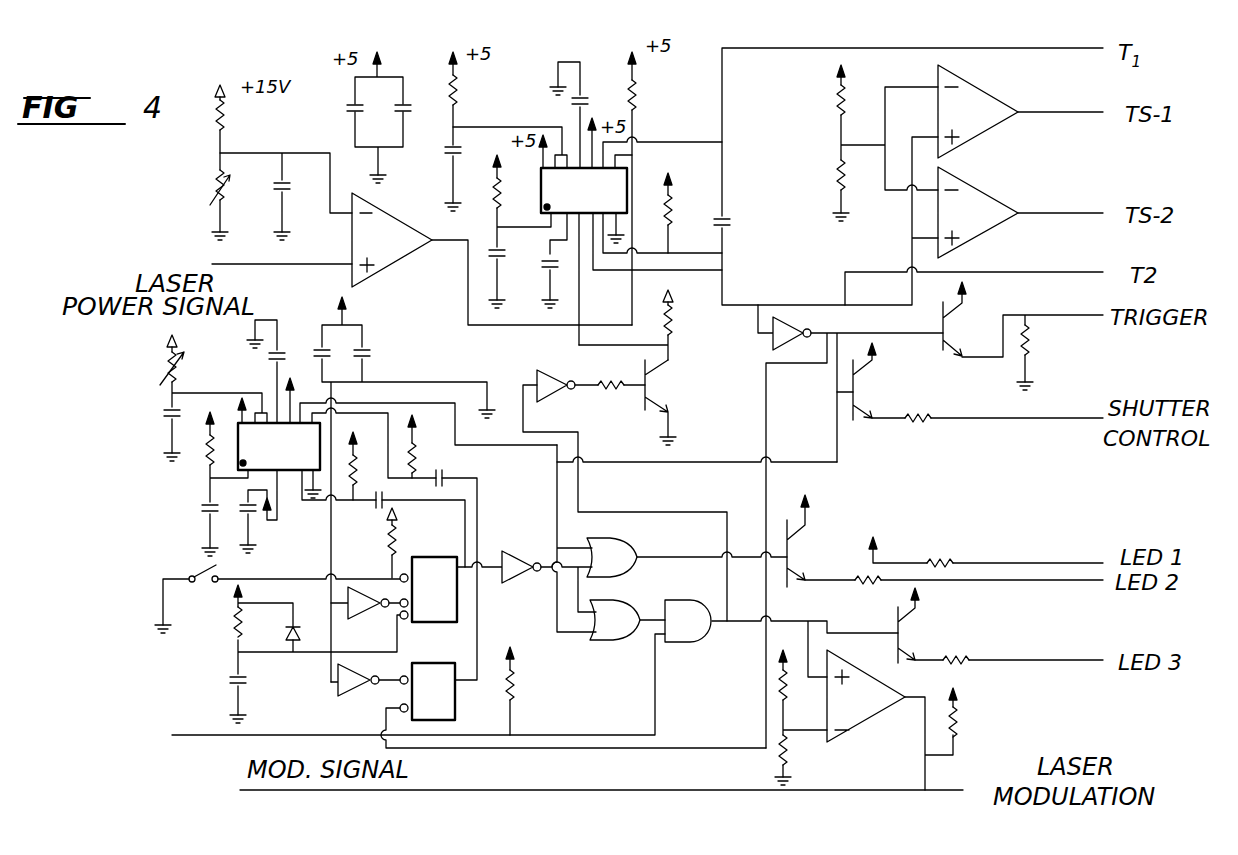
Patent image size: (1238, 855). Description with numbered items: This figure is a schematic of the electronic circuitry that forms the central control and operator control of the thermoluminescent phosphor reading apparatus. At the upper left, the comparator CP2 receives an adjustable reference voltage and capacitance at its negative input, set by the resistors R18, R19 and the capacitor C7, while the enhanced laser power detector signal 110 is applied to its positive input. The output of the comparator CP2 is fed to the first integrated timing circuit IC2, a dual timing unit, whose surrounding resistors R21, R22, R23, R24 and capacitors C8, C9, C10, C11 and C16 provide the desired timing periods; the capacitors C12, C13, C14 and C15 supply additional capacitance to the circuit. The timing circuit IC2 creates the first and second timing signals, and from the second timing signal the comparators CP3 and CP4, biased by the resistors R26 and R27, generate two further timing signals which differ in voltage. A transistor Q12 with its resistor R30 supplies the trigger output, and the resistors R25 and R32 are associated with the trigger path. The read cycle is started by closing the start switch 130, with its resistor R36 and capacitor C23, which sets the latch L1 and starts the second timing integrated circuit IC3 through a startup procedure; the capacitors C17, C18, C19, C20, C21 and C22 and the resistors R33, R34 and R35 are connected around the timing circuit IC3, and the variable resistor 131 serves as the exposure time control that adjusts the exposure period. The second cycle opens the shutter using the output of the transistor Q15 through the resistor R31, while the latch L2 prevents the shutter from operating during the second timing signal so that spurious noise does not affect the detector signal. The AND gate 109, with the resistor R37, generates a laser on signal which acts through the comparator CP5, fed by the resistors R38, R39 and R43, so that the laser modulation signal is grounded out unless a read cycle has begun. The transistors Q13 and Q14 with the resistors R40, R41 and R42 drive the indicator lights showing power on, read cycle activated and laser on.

The resistor R18 is at (215, 127).
The variable resistor R19 is at (215, 185).
The capacitor C7 is at (275, 184).
The laser power signal line 110 is at (305, 268).
The comparator CP2 is at (392, 240).
The capacitor C12 is at (352, 108).
The capacitor C13 is at (408, 106).
The resistor R21 is at (458, 102).
The capacitor C8 is at (440, 152).
The first integrated timing circuit IC2 is at (584, 190).
The resistor R22 is at (505, 192).
The capacitor C9 is at (520, 246).
The capacitor C10 is at (540, 263).
The capacitor C11 is at (612, 88).
The resistor R23 is at (638, 97).
The resistor R24 is at (673, 212).
The capacitor C16 is at (730, 222).
The resistor R26 is at (838, 108).
The resistor R27 is at (838, 176).
The comparator CP3 is at (978, 111).
The comparator CP4 is at (978, 212).
The transistor Q12 is at (967, 320).
The resistor R30 is at (1032, 348).
The transistor Q15 is at (877, 381).
The resistor R31 is at (903, 424).
The resistor R25 is at (673, 320).
The resistor R32 is at (607, 377).
The capacitor C14 is at (318, 352).
The capacitor C15 is at (368, 352).
The capacitor C18 is at (268, 353).
The variable resistor 131 is at (151, 362).
The capacitor C17 is at (163, 414).
The second timing integrated circuit IC3 is at (279, 446).
The resistor R33 is at (205, 452).
The capacitor C19 is at (203, 510).
The capacitor C20 is at (250, 515).
The capacitor C22 is at (447, 470).
The capacitor C21 is at (375, 505).
The resistor R35 is at (418, 443).
The resistor R34 is at (360, 470).
The start switch 130 is at (177, 571).
The resistor R36 is at (233, 628).
The capacitor C23 is at (232, 680).
The latch L1 is at (428, 589).
The latch L2 is at (427, 691).
The AND gate 109 is at (683, 645).
The resistor R37 is at (518, 692).
The transistor Q13 is at (811, 541).
The resistor R41 is at (871, 582).
The resistor R40 is at (945, 558).
The transistor Q14 is at (919, 625).
The resistor R42 is at (967, 655).
The resistor R39 is at (779, 690).
The resistor R38 is at (787, 748).
The comparator CP5 is at (866, 696).
The resistor R43 is at (960, 728).